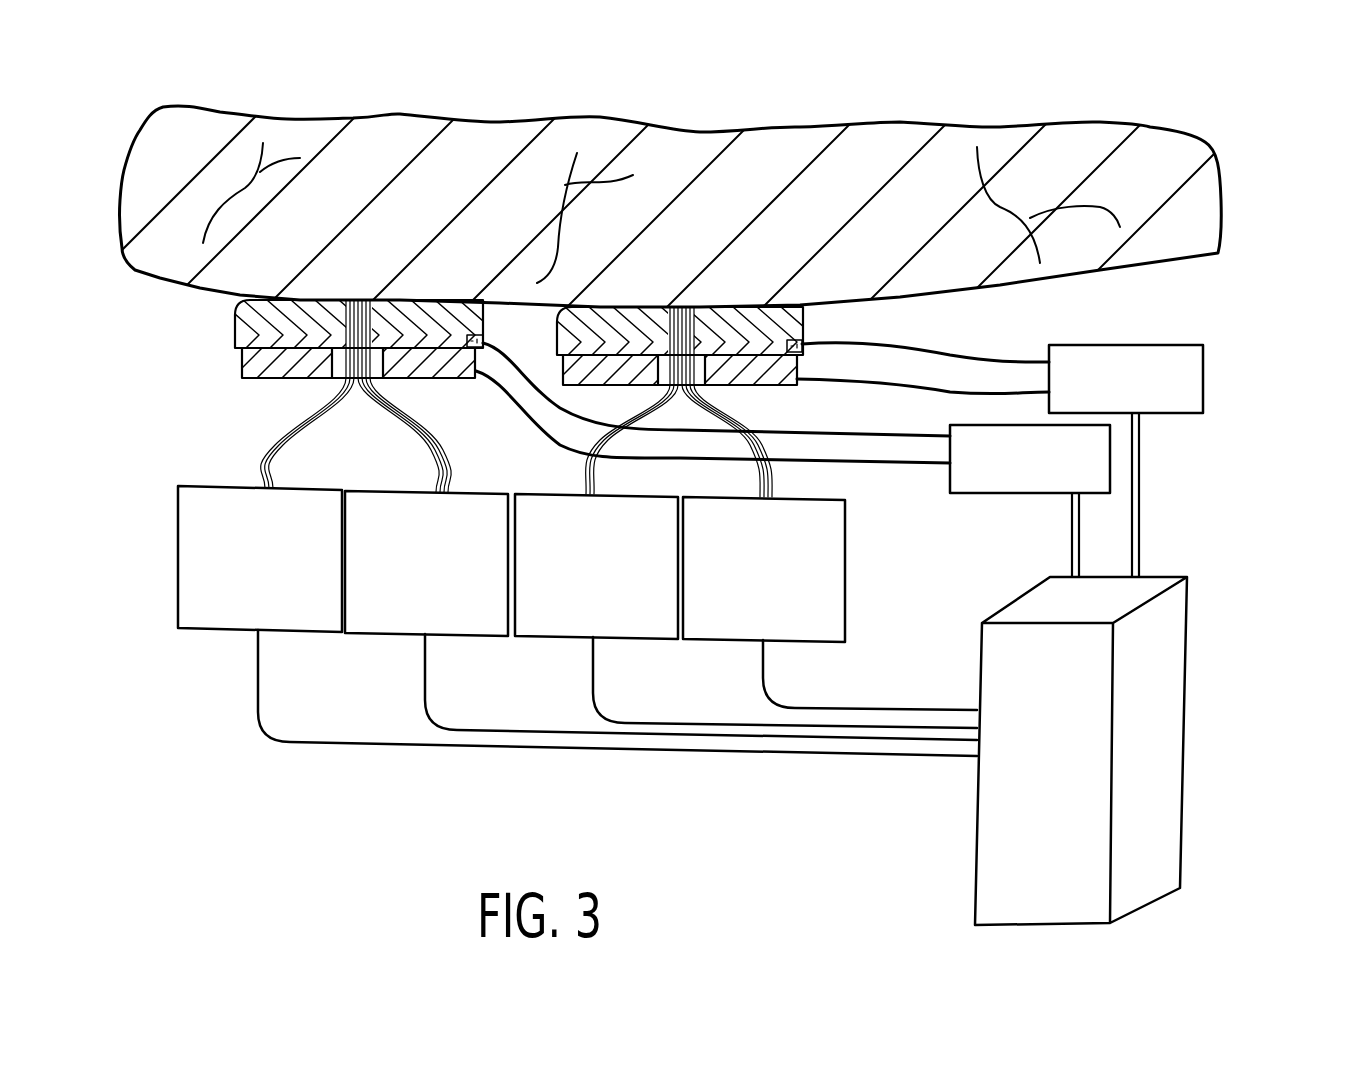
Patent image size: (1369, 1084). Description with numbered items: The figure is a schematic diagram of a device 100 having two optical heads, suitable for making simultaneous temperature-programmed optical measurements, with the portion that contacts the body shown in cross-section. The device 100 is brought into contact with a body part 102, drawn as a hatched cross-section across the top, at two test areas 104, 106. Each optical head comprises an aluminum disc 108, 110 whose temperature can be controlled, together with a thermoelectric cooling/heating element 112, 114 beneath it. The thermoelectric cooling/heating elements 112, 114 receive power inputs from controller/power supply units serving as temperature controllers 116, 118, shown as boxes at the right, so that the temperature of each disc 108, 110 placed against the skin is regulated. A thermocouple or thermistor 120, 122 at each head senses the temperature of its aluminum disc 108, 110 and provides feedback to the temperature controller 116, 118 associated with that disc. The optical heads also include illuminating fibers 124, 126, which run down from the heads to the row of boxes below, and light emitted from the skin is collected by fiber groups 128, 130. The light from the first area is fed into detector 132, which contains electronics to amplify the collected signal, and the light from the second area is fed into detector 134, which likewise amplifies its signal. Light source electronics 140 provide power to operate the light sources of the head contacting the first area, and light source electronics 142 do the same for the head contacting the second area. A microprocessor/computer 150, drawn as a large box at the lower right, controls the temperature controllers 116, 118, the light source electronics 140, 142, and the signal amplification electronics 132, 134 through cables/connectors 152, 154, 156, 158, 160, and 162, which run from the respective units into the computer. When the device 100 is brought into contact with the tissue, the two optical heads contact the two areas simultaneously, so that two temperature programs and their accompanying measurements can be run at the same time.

The device 100 is at (283, 782).
The body part 102 is at (627, 207).
The test area 104 is at (392, 300).
The test area 106 is at (757, 305).
The aluminum disc 108 is at (277, 323).
The aluminum disc 110 is at (762, 332).
The thermoelectric cooling/heating element 112 is at (240, 377).
The thermoelectric cooling/heating element 114 is at (765, 375).
The temperature controller 116 is at (1037, 468).
The temperature controller 118 is at (1180, 382).
The thermocouple 120 is at (484, 334).
The thermocouple 122 is at (802, 342).
The illuminating fibers 124 is at (263, 457).
The illuminating fibers 126 is at (585, 476).
The fiber group 128 is at (418, 448).
The fiber group 130 is at (752, 477).
The detector 132 is at (423, 593).
The detector 134 is at (757, 597).
The light source electronics 140 is at (243, 577).
The light source electronics 142 is at (588, 604).
The microprocessor/computer 150 is at (1155, 765).
The cable/connector 152 is at (1072, 535).
The cable/connector 154 is at (1139, 533).
The cable/connector 156 is at (395, 746).
The cable/connector 158 is at (538, 738).
The cable/connector 160 is at (741, 723).
The cable/connector 162 is at (883, 708).